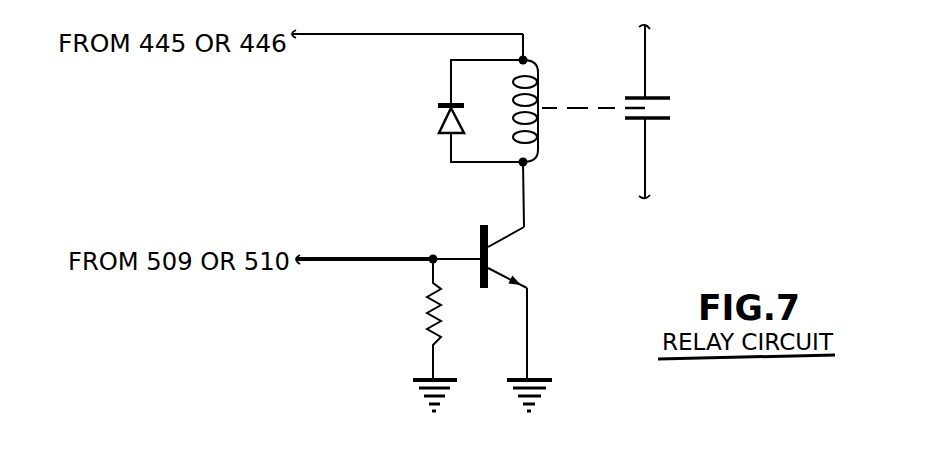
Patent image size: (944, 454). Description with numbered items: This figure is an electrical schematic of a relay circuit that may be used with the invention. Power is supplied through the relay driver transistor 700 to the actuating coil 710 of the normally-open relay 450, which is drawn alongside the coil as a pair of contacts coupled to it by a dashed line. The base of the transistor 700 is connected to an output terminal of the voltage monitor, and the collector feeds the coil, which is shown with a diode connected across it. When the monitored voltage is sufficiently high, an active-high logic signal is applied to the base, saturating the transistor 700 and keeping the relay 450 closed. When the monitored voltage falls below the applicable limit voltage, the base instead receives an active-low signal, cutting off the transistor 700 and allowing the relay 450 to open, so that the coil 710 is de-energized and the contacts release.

The relay coil 710 is at (540, 92).
The relay driver transistor 700 is at (493, 260).
The normally-open relay 450 is at (657, 108).